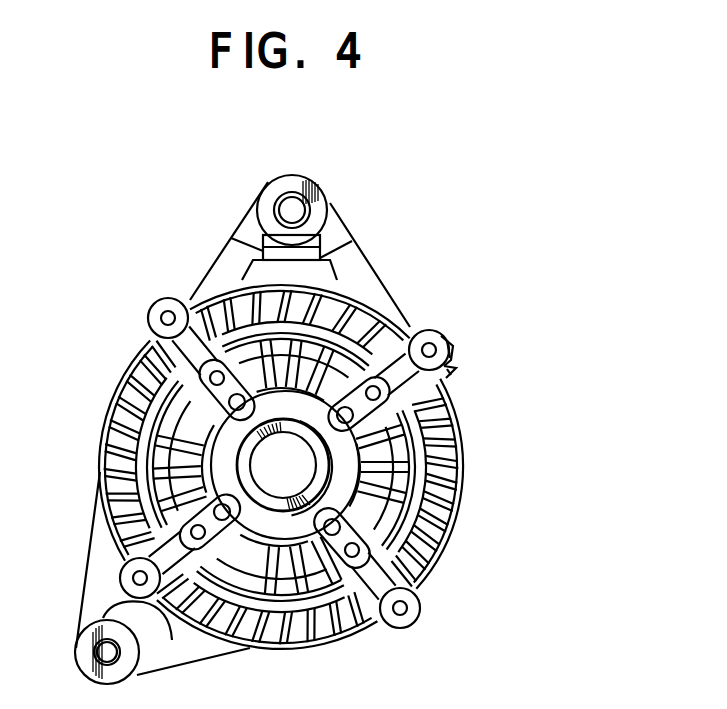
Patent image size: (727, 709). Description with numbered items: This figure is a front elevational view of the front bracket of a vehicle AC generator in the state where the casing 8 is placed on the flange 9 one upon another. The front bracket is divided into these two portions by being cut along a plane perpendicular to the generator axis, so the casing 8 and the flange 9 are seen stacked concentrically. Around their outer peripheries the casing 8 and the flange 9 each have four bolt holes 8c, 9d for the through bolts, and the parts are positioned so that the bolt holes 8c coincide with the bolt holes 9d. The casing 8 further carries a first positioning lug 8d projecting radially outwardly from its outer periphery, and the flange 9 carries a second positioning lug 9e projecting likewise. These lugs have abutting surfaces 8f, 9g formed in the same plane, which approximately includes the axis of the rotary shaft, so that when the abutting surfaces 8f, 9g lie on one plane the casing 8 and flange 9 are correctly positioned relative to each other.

The casing 8 is at (104, 420).
The flange 9 is at (228, 243).
The bolt holes 8c is at (476, 321).
The bolt holes 9d is at (433, 342).
The first positioning lug 8d is at (523, 350).
The second positioning lug 9e is at (453, 355).
The abutting surface 8f is at (518, 394).
The abutting surface 9g is at (451, 372).